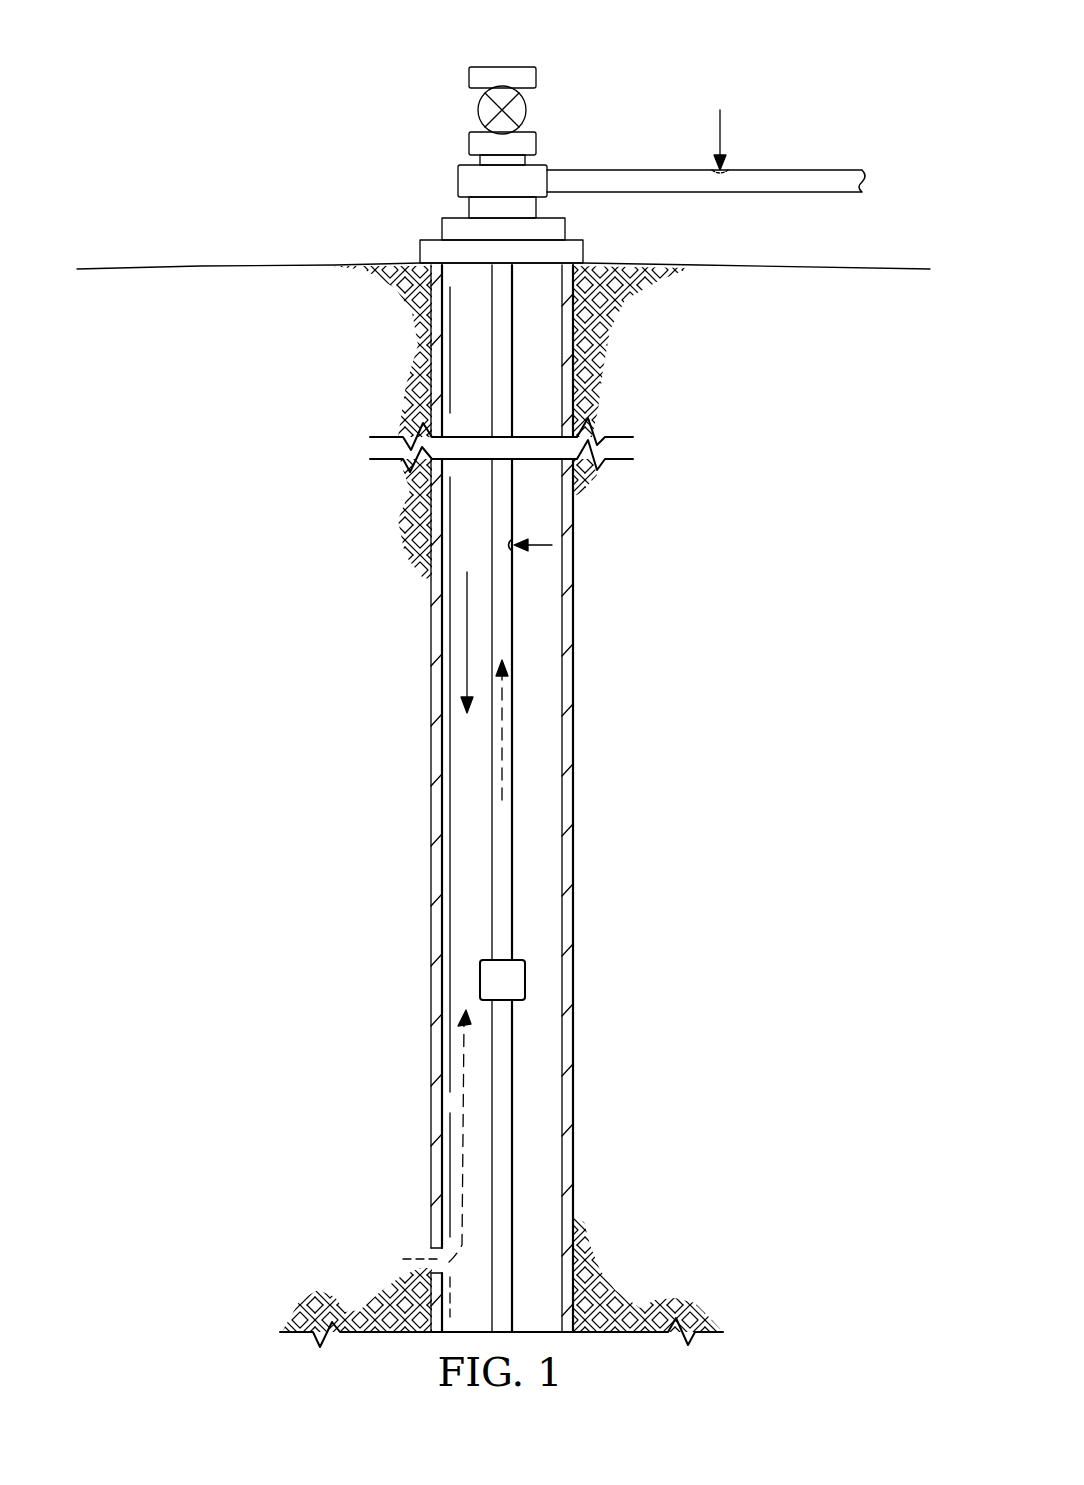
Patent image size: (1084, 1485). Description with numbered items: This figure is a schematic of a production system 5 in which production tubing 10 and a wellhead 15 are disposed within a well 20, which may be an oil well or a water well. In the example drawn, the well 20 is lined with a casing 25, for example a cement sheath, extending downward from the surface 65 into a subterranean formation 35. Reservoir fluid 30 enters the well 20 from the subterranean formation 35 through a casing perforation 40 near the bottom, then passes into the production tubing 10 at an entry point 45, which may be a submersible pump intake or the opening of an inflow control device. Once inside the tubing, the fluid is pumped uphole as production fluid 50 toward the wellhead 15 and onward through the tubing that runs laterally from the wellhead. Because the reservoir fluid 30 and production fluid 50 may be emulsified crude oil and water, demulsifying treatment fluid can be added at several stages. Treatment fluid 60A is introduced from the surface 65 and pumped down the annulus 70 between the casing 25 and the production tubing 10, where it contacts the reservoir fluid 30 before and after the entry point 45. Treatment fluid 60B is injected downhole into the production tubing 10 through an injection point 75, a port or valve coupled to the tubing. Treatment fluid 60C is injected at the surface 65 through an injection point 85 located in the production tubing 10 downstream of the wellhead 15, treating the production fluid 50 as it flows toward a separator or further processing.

The production system 5 is at (710, 66).
The production tubing 10 is at (490, 343).
The wellhead 15 is at (458, 70).
The well 20 is at (583, 909).
The casing 25 is at (568, 1027).
The reservoir fluid 30 is at (462, 1102).
The subterranean formation 35 is at (636, 1302).
The casing perforation 40 is at (433, 1258).
The entry point 45 is at (516, 980).
The production fluid 50 is at (503, 742).
The treatment fluid 60A is at (466, 637).
The treatment fluid 60B is at (552, 545).
The treatment fluid 60C is at (720, 133).
The surface 65 is at (255, 265).
The annulus 70 is at (553, 1098).
The injection point 75 is at (528, 530).
The injection point 85 is at (740, 157).